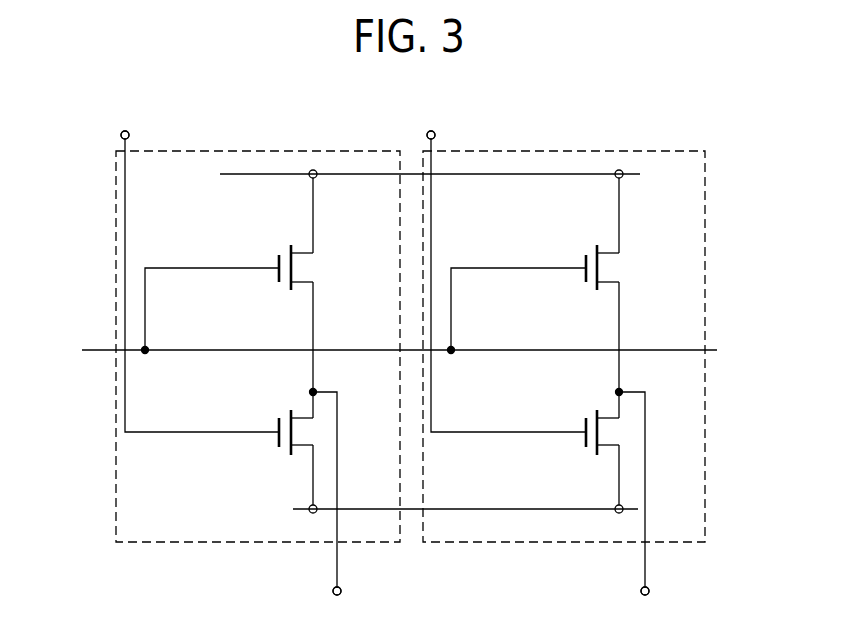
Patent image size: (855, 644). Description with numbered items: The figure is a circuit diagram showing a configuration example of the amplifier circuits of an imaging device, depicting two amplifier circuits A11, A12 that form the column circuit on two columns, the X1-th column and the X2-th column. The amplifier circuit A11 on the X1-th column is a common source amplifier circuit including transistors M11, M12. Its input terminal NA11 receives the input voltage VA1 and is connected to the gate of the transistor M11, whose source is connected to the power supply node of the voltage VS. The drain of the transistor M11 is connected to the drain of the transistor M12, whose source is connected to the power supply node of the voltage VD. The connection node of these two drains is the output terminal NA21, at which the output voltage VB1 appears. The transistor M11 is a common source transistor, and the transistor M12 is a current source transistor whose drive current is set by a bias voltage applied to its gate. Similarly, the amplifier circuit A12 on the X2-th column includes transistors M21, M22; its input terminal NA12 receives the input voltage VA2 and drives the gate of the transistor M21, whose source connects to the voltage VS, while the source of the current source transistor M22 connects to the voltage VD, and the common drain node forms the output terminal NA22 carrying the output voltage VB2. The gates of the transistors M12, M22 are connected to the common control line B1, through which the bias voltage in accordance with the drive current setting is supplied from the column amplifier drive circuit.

The amplifier circuit A11 is at (116, 211).
The amplifier circuit A12 is at (705, 200).
The transistor M11 is at (279, 443).
The transistor M12 is at (305, 268).
The transistor M21 is at (586, 443).
The transistor M22 is at (612, 268).
The input terminal NA11 is at (129, 134).
The input terminal NA12 is at (435, 134).
The output terminal NA21 is at (341, 591).
The output terminal NA22 is at (649, 591).
The input voltage VA1 is at (193, 267).
The input voltage VA2 is at (499, 267).
The output voltage VB1 is at (333, 510).
The output voltage VB2 is at (640, 510).
The voltage VD is at (447, 174).
The voltage VS is at (450, 509).
The common control line B1 is at (385, 350).